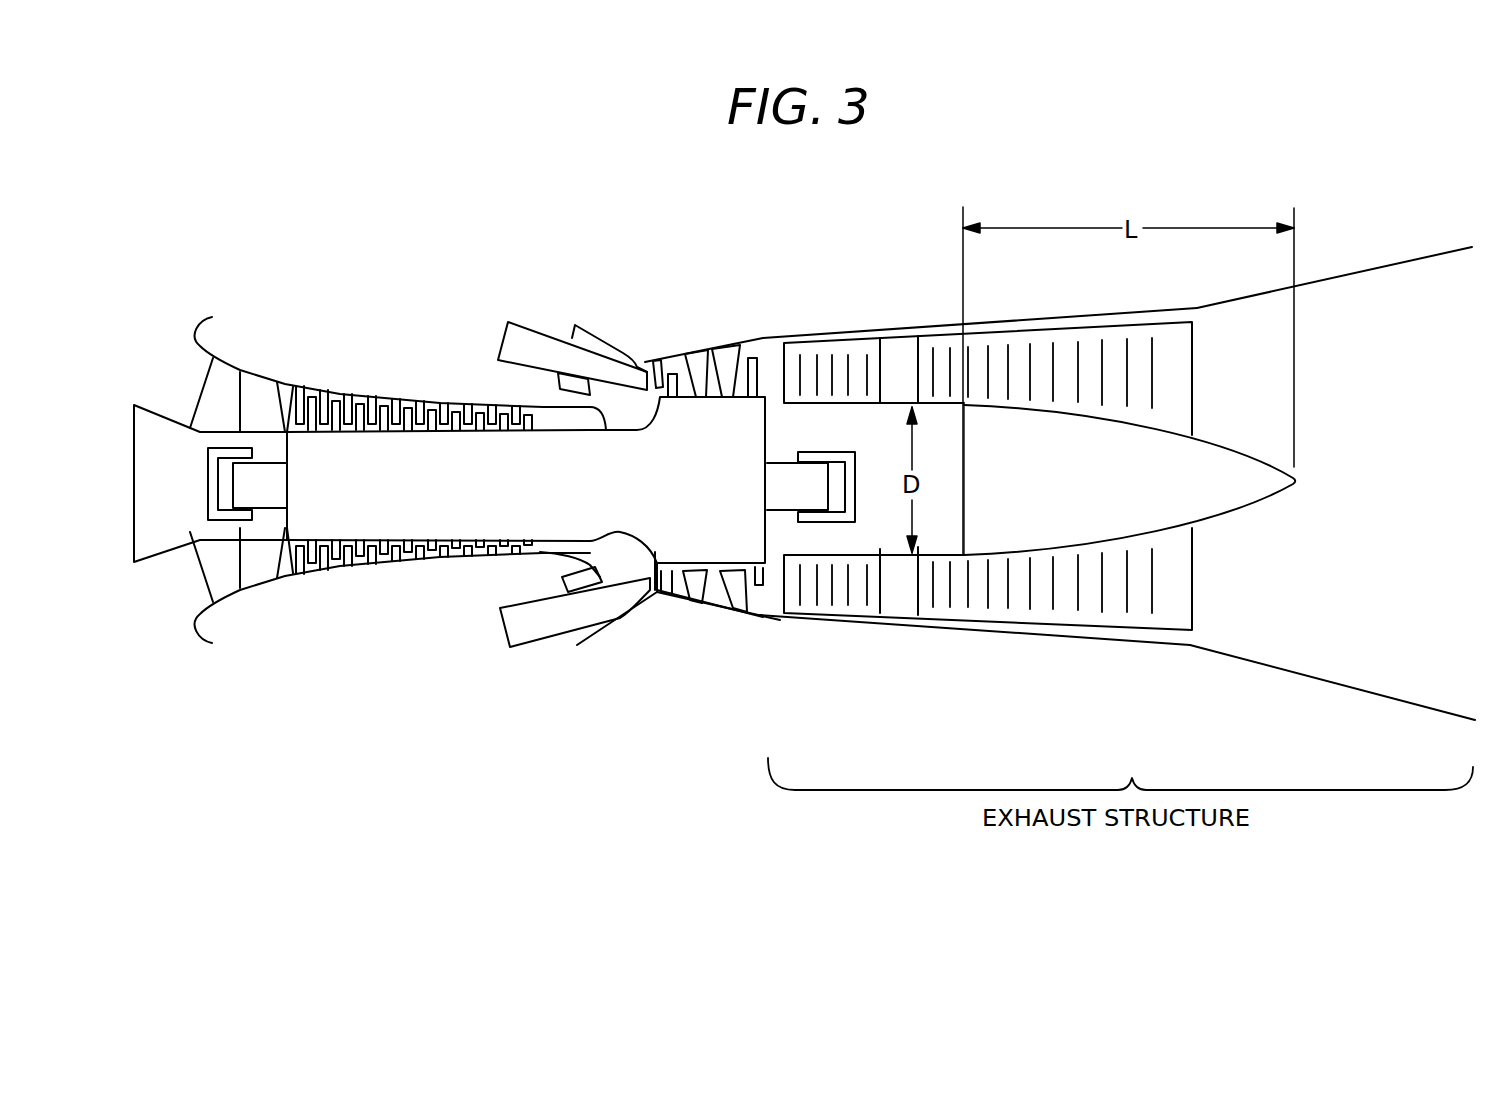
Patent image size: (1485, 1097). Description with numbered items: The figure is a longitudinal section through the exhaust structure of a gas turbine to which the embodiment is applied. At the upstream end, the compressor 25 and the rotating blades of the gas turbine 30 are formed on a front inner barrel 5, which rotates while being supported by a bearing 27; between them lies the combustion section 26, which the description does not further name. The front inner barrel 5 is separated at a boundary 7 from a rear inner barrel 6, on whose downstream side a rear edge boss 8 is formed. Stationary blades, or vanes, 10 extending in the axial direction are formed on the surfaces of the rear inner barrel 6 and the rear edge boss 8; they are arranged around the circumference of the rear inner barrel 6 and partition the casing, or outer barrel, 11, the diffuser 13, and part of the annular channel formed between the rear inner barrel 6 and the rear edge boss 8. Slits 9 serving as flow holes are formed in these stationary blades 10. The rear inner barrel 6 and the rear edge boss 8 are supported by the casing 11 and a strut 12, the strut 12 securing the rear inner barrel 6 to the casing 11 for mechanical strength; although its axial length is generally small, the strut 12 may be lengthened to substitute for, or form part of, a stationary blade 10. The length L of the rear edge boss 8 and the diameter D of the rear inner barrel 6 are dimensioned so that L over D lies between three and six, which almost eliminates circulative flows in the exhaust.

The front inner barrel 5 is at (710, 383).
The rear inner barrel 6 is at (825, 557).
The boundary 7 is at (763, 443).
The rear edge boss 8 is at (1240, 447).
The slits 9 is at (1013, 598).
The stationary blades 10 is at (1192, 577).
The casing 11 is at (953, 635).
The strut 12 is at (897, 343).
The diffuser 13 is at (1333, 685).
The compressor 25 is at (353, 400).
The combustor 26 is at (535, 340).
The bearing 27 is at (213, 445).
The gas turbine 30 is at (710, 603).